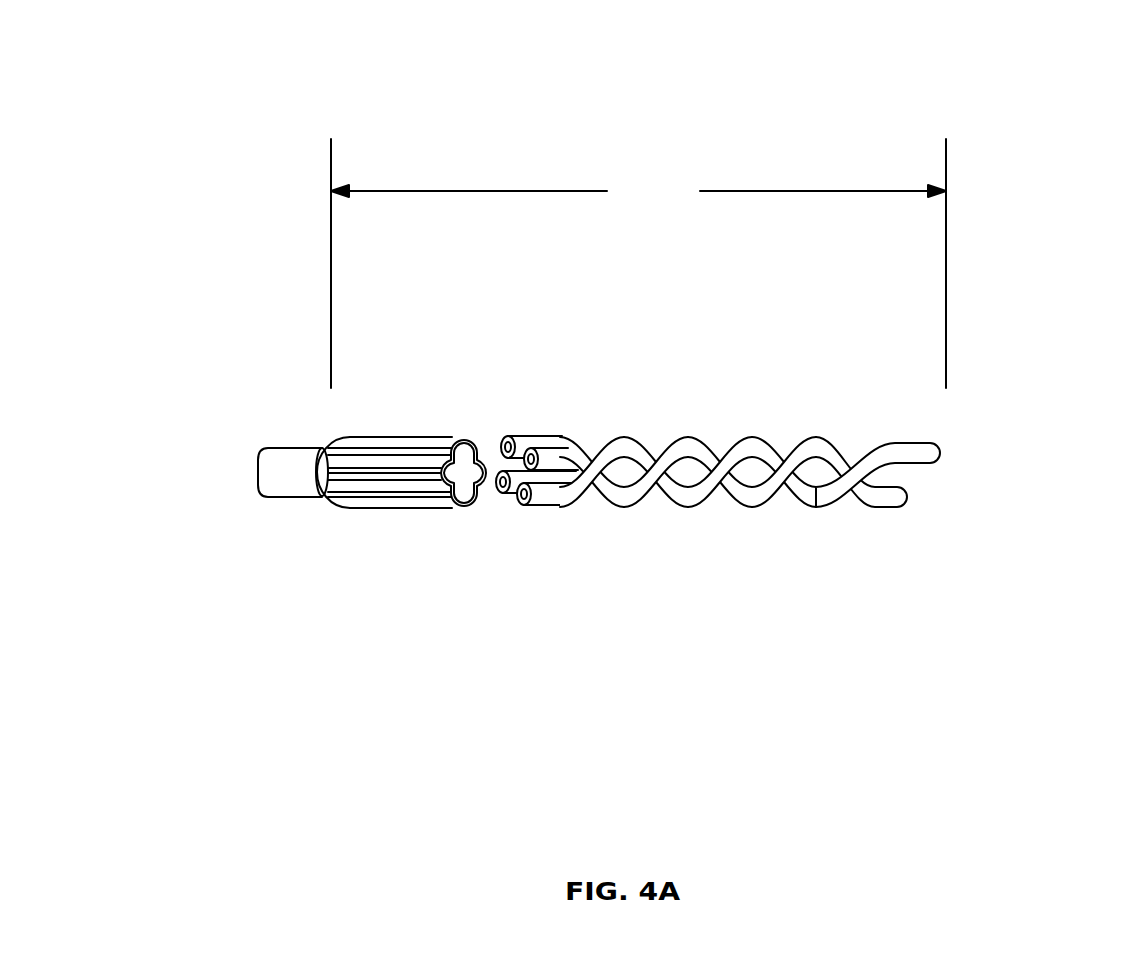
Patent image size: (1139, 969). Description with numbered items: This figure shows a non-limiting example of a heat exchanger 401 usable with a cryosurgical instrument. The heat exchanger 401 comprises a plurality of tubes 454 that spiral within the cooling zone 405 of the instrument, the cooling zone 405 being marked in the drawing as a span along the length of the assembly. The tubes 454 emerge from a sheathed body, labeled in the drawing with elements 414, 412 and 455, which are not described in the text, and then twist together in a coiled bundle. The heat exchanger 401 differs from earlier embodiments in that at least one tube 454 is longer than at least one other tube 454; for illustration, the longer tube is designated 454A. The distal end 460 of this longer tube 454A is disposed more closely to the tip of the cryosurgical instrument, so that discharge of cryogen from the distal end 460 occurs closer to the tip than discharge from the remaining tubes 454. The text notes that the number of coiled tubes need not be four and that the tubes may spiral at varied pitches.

The heat exchanger 401 is at (968, 175).
The cooling zone 405 is at (638, 263).
The cable 414 is at (222, 476).
The outer sheath 412 is at (388, 508).
The lumens 455 is at (448, 449).
The tubes 454 is at (662, 510).
The longer tube 454A is at (922, 440).
The distal end 460 is at (942, 450).